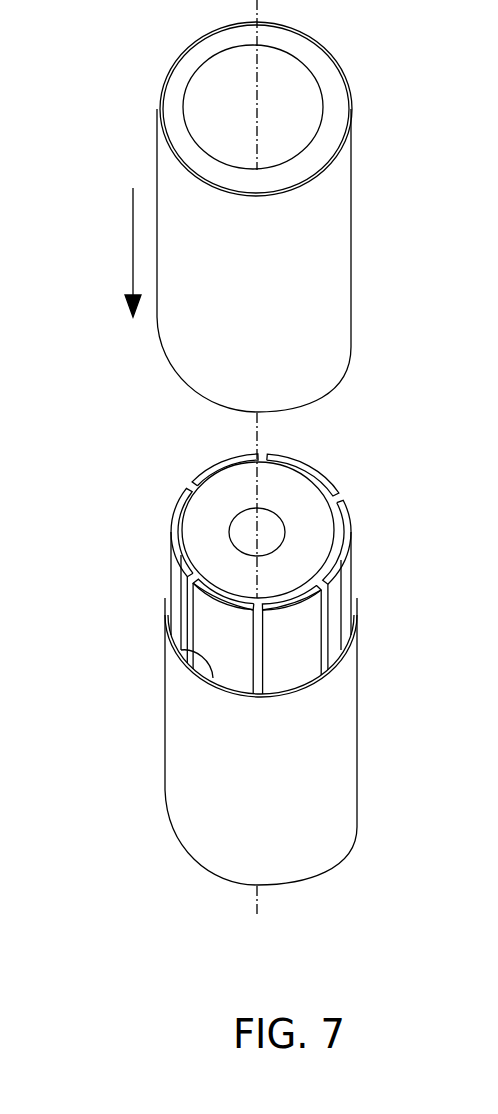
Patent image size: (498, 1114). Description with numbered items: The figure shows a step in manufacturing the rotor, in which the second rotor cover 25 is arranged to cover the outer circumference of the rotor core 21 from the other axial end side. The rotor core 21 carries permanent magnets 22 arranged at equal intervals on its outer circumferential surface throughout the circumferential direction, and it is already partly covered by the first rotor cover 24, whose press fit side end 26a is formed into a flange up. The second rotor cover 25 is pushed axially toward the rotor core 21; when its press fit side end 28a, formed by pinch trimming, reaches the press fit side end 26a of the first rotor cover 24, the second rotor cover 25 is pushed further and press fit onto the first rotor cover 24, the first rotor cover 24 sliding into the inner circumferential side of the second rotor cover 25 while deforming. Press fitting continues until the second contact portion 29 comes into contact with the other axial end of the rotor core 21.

The rotor core 21 is at (313, 530).
The permanent magnets 22 is at (298, 627).
The first rotor cover 24 is at (347, 753).
The second rotor cover 25 is at (335, 250).
The press fit side end 26a is at (183, 655).
The press fit side end 28a is at (333, 373).
The second contact portion 29 is at (327, 73).